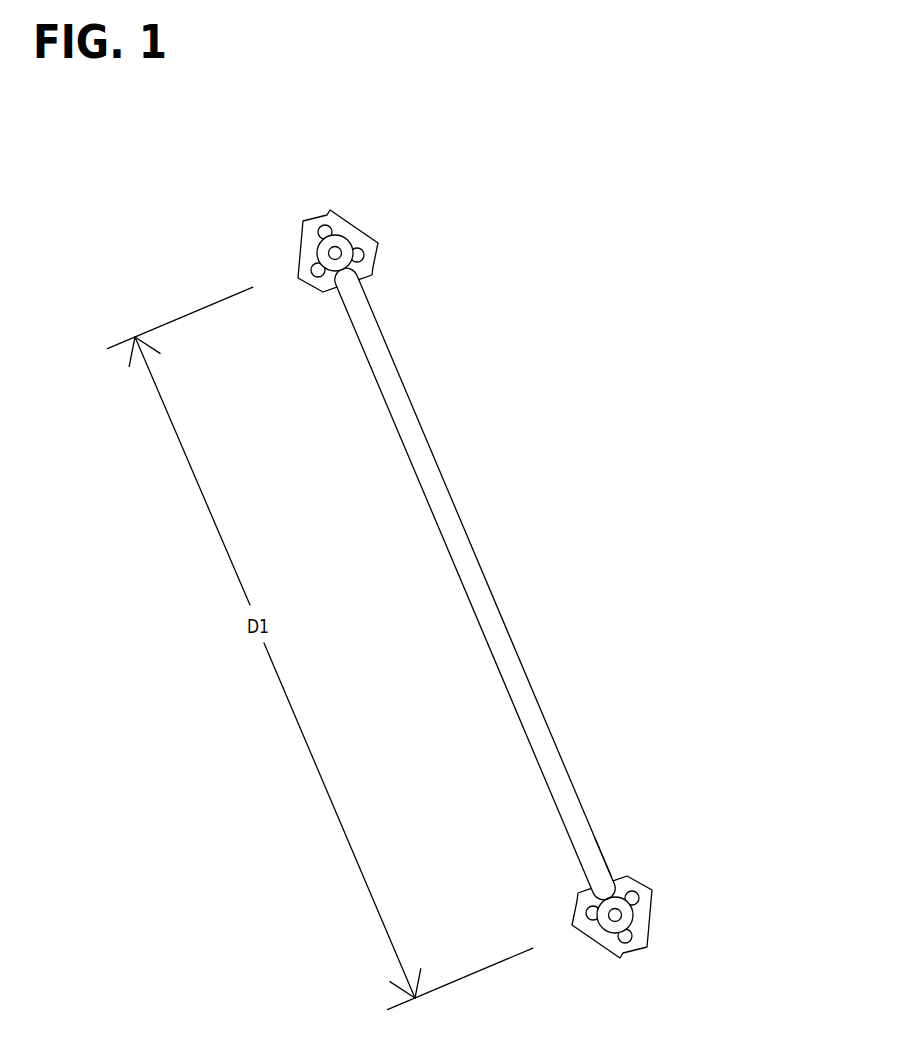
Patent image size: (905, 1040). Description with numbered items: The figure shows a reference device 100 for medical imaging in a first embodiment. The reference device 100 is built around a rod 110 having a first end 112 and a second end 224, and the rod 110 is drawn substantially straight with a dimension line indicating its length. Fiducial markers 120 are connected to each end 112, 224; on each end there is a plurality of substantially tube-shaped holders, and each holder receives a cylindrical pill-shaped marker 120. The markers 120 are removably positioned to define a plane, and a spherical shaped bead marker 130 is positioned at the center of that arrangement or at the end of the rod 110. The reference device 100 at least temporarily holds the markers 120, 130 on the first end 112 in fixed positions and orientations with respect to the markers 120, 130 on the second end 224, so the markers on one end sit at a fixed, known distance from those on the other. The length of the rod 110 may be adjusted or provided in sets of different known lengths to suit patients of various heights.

The reference device 100 is at (538, 543).
The rod 110 is at (537, 698).
The first end 112 is at (627, 860).
The fiducial markers 120 is at (538, 543).
The spherical shaped bead marker 130 is at (335, 253).
The second end 224 is at (405, 247).